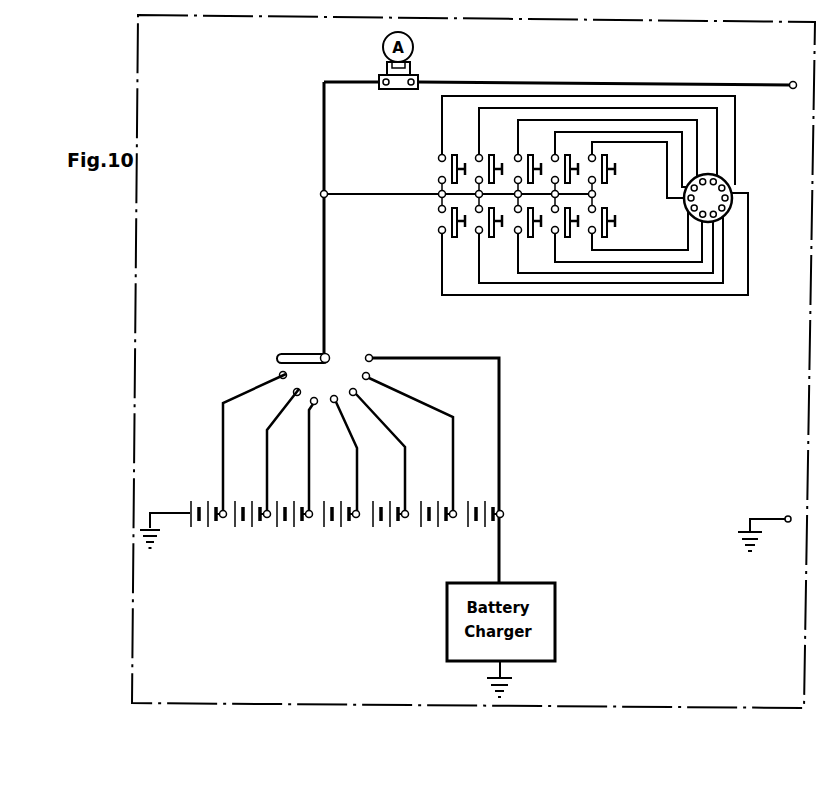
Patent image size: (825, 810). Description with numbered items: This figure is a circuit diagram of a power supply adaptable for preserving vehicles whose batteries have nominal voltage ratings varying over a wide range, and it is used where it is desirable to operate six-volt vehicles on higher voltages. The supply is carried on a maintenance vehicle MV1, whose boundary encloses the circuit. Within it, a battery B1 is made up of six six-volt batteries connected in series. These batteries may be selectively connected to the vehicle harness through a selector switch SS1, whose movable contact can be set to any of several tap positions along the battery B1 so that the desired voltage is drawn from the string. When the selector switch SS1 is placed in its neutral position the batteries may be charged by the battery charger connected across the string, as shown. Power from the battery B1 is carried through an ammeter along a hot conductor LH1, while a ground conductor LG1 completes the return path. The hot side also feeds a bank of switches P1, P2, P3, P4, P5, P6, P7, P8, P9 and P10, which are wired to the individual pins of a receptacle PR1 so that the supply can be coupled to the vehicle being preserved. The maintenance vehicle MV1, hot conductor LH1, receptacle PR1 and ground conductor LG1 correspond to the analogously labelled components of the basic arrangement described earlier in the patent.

The maintenance vehicle MV1 is at (313, 637).
The hot conductor LH1 is at (714, 84).
The ground conductor LG1 is at (781, 516).
The push-button switch P1 is at (453, 155).
The push-button switch P2 is at (491, 157).
The push-button switch P3 is at (530, 157).
The push-button switch P4 is at (567, 157).
The push-button switch P5 is at (608, 157).
The push-button switch P6 is at (453, 237).
The push-button switch P7 is at (490, 237).
The push-button switch P8 is at (529, 237).
The push-button switch P9 is at (566, 237).
The push-button switch P10 is at (607, 237).
The receptacle PR1 is at (687, 210).
The selector switch SS1 is at (311, 353).
The battery B1 is at (323, 562).